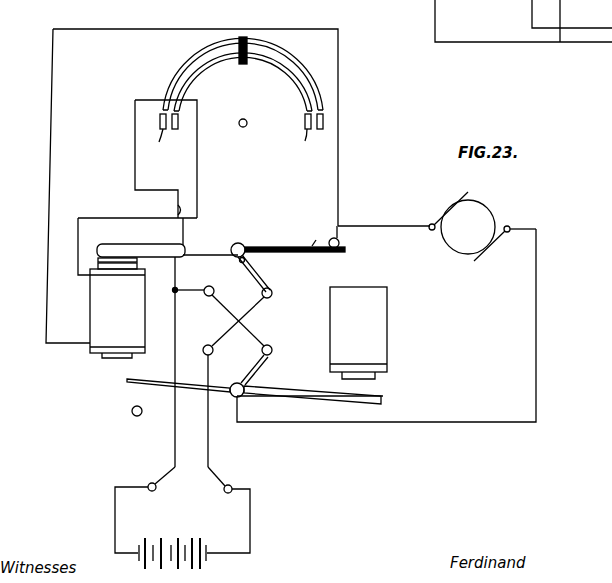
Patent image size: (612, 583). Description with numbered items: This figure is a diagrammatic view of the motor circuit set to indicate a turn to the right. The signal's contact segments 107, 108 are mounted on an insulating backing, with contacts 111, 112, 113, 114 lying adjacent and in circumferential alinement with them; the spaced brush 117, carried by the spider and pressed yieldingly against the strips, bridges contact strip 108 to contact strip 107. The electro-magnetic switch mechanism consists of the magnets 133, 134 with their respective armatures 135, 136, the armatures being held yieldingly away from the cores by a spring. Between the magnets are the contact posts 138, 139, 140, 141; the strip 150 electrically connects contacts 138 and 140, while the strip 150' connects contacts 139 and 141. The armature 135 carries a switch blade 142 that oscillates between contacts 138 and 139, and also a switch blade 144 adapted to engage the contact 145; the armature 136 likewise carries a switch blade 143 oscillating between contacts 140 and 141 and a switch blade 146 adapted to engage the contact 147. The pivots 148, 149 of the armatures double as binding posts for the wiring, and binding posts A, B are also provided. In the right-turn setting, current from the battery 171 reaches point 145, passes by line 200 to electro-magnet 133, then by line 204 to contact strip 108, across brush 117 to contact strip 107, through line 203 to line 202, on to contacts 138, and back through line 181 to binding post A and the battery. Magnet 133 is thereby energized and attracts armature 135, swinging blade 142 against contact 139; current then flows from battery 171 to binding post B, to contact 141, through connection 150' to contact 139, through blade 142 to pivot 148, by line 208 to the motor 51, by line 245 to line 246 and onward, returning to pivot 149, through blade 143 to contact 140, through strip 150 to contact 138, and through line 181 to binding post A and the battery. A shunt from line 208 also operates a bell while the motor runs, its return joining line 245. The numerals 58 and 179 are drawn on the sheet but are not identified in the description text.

The line 200 is at (48, 164).
The line 203 is at (141, 159).
The line 204 is at (206, 178).
The line 202 is at (156, 207).
The contact segment 107 is at (308, 72).
The contact segment 108 is at (338, 90).
The brush 117 is at (247, 42).
The contact 111 is at (323, 124).
The contact 112 is at (300, 134).
The contact 113 is at (162, 135).
The contact 114 is at (178, 125).
The pin 58 is at (255, 128).
The electro-magnet 133 is at (117, 308).
The electro-magnet 134 is at (387, 327).
The armature 135 is at (223, 241).
The pivot 148 is at (295, 238).
The switch blade 144 is at (314, 234).
The contact 145 is at (339, 244).
The switch blade 142 is at (256, 282).
The contact post 139 is at (272, 292).
The contact post 138 is at (196, 282).
The strip 150 is at (251, 320).
The strip 150' is at (227, 321).
The contact post 141 is at (213, 352).
The contact post 140 is at (272, 352).
The switch blade 143 is at (253, 377).
The pivot 149 is at (233, 397).
The switch blade 146 is at (155, 373).
The armature 136 is at (320, 400).
The contact 147 is at (132, 412).
The line 181 is at (171, 437).
The line 208 is at (380, 218).
The motor 51 is at (487, 213).
The line 245 is at (536, 224).
The line 246 is at (539, 333).
The binding post A is at (156, 490).
The binding post B is at (231, 486).
The battery circuit 179 is at (253, 527).
The battery 171 is at (200, 564).